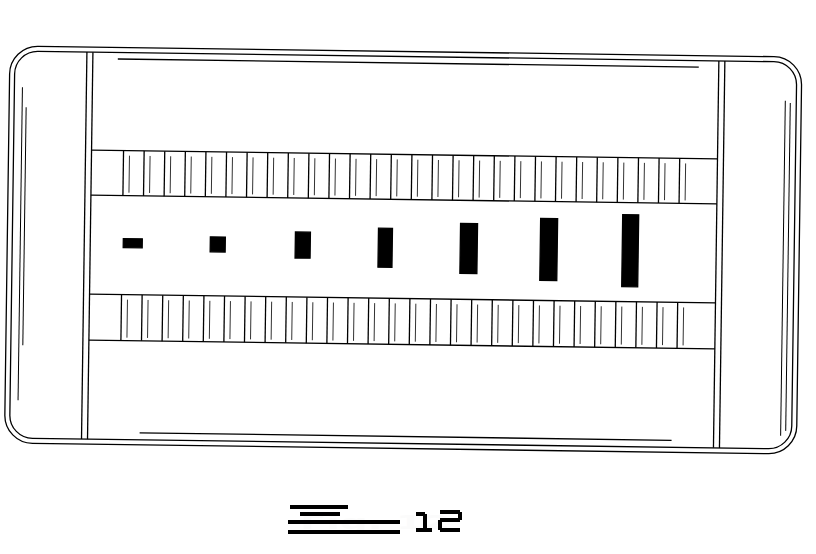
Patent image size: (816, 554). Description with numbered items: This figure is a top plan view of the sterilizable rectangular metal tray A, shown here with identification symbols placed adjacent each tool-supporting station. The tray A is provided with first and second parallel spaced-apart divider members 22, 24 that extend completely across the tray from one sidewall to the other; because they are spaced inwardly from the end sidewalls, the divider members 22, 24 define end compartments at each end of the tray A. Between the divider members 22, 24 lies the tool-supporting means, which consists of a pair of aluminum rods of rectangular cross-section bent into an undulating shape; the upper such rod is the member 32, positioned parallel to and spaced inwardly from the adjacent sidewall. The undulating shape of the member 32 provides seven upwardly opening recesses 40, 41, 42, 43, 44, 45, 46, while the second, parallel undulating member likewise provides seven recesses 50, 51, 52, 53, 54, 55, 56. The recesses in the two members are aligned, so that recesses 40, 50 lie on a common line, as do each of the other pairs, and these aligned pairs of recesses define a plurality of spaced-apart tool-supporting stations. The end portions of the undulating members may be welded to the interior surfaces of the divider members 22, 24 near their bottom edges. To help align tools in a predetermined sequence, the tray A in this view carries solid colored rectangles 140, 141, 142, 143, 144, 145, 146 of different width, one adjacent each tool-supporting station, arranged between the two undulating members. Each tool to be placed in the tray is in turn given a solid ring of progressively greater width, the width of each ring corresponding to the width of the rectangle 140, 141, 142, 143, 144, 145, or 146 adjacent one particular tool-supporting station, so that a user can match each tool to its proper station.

The tray A is at (656, 56).
The first divider member 22 is at (84, 356).
The second divider member 24 is at (725, 245).
The tool-supporting member 32 is at (404, 161).
The recess 40 is at (157, 149).
The recess 41 is at (240, 149).
The recess 42 is at (322, 149).
The recess 43 is at (404, 149).
The recess 44 is at (487, 149).
The recess 45 is at (569, 149).
The recess 46 is at (652, 149).
The recess 50 is at (154, 340).
The recess 51 is at (236, 340).
The recess 52 is at (318, 340).
The recess 53 is at (401, 340).
The recess 54 is at (483, 340).
The recess 55 is at (566, 340).
The recess 56 is at (648, 340).
The solid colored rectangle 140 is at (145, 239).
The solid colored rectangle 141 is at (228, 236).
The solid colored rectangle 142 is at (313, 230).
The solid colored rectangle 143 is at (395, 225).
The solid colored rectangle 144 is at (480, 219).
The solid colored rectangle 145 is at (560, 214).
The solid colored rectangle 146 is at (641, 209).